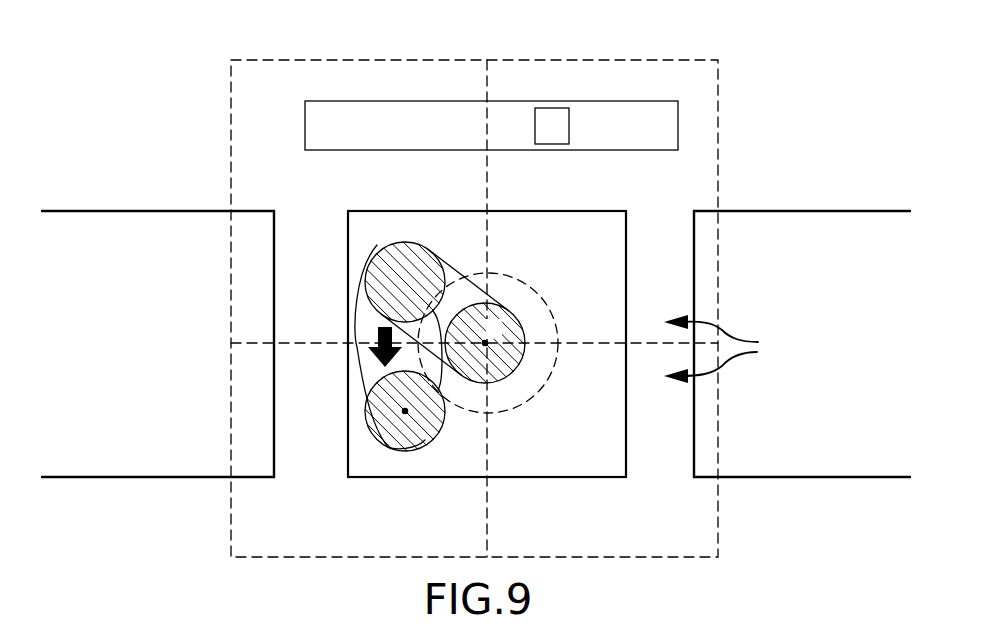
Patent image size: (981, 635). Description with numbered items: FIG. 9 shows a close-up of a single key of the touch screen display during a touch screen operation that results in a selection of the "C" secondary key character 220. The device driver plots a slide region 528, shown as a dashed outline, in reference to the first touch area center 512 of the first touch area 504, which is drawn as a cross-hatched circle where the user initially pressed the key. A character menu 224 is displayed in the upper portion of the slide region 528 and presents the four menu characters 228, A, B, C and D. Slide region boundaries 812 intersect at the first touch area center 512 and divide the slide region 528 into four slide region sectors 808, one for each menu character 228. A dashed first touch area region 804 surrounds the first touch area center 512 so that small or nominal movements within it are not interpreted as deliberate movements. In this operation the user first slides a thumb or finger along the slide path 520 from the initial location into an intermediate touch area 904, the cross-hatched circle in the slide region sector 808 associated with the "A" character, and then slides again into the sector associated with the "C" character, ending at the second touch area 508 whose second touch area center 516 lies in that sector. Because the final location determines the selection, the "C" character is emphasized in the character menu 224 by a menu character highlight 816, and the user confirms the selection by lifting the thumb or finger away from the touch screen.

The secondary key character 220 is at (596, 463).
The character menu 224 is at (610, 120).
The menu character 228 is at (433, 117).
The first touch area 504 is at (507, 337).
The second touch area 508 is at (408, 436).
The first touch area center 512 is at (486, 345).
The second touch area center 516 is at (405, 411).
The slide path 520 is at (376, 352).
The slide region 528 is at (718, 160).
The first touch area region 804 is at (532, 398).
The slide region sector 808 is at (731, 349).
The slide region boundary 812 is at (328, 342).
The menu character highlight 816 is at (560, 118).
The object A 904 is at (405, 276).